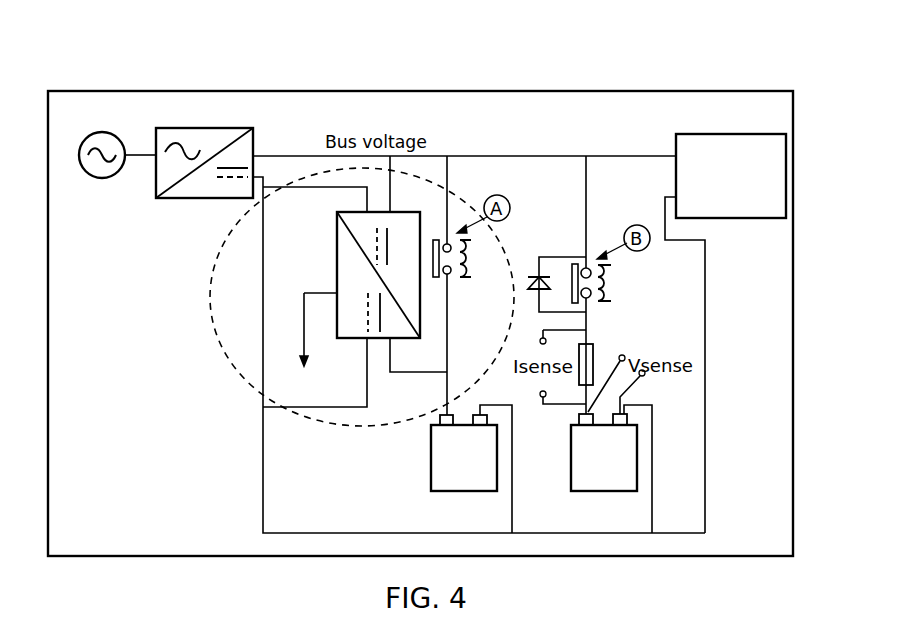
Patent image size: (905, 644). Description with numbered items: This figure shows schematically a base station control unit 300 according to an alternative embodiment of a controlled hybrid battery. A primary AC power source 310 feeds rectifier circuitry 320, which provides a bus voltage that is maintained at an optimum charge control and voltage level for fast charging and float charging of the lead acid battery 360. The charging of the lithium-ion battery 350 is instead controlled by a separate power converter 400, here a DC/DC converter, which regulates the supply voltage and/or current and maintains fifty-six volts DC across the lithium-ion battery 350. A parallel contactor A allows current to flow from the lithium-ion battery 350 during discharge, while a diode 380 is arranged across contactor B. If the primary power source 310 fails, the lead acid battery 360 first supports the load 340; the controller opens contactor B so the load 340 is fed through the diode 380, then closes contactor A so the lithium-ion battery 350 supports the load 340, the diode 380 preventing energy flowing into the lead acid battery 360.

The base station control unit 300 is at (521, 91).
The primary AC power source 310 is at (102, 140).
The rectifier circuitry 320 is at (237, 137).
The load 340 is at (730, 152).
The lithium ion cells 350 is at (462, 478).
The lead acid cells 360 is at (610, 478).
The diode 380 is at (527, 286).
The separate power converter 400 is at (217, 331).